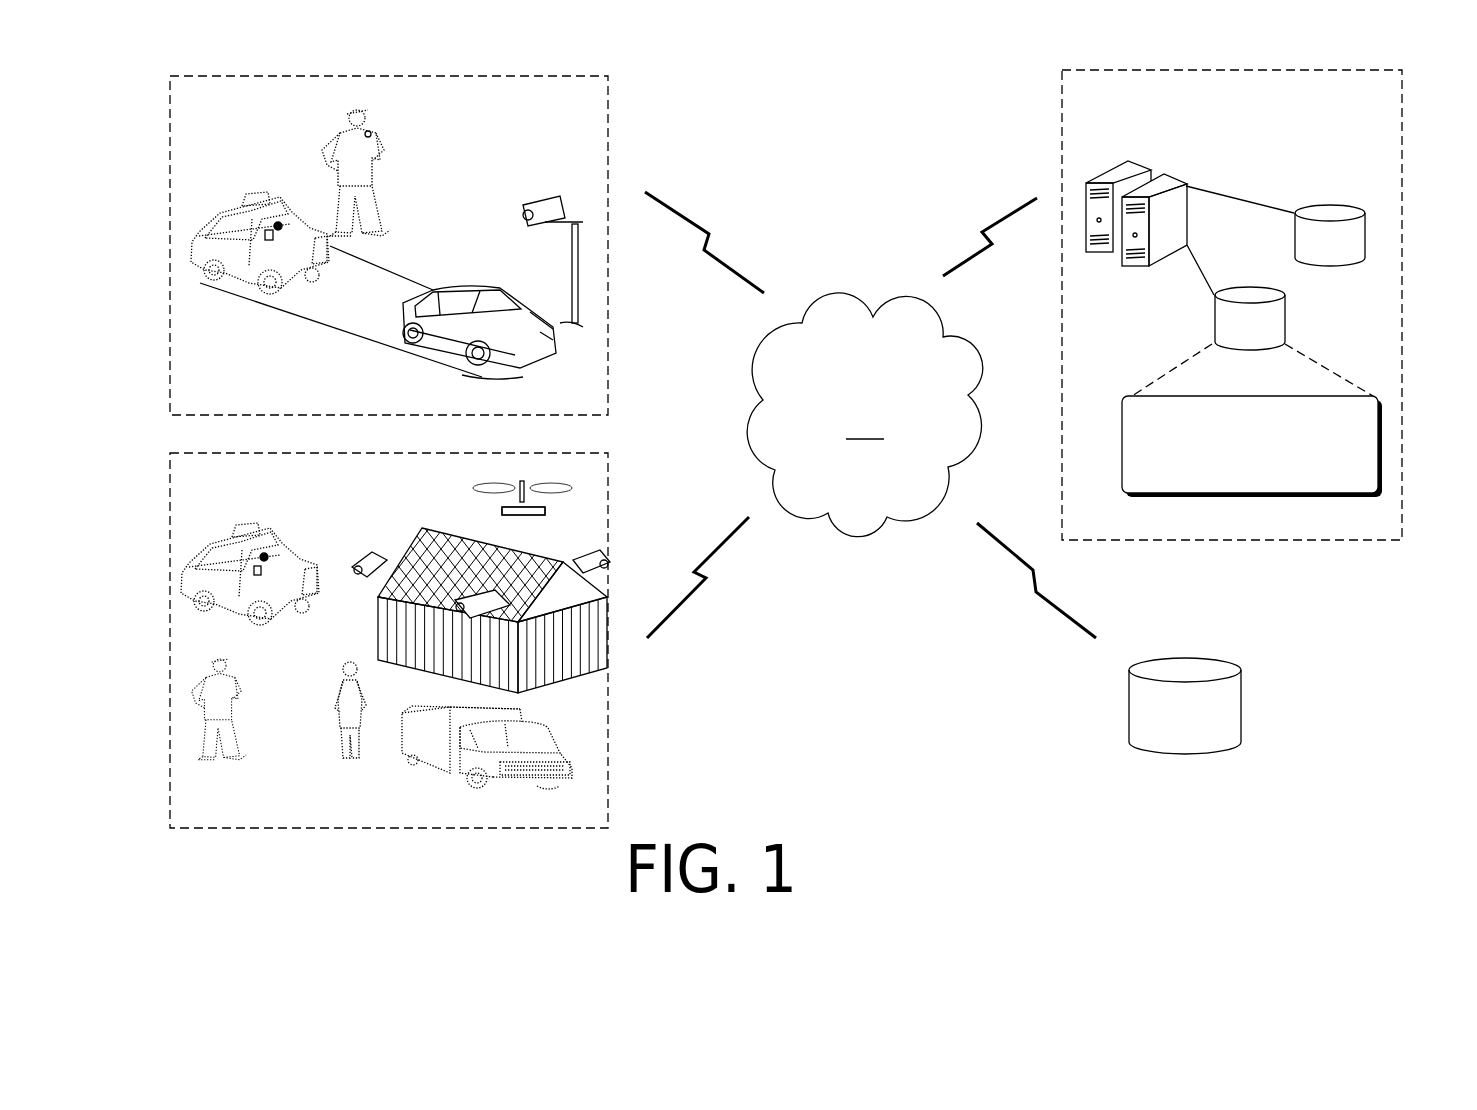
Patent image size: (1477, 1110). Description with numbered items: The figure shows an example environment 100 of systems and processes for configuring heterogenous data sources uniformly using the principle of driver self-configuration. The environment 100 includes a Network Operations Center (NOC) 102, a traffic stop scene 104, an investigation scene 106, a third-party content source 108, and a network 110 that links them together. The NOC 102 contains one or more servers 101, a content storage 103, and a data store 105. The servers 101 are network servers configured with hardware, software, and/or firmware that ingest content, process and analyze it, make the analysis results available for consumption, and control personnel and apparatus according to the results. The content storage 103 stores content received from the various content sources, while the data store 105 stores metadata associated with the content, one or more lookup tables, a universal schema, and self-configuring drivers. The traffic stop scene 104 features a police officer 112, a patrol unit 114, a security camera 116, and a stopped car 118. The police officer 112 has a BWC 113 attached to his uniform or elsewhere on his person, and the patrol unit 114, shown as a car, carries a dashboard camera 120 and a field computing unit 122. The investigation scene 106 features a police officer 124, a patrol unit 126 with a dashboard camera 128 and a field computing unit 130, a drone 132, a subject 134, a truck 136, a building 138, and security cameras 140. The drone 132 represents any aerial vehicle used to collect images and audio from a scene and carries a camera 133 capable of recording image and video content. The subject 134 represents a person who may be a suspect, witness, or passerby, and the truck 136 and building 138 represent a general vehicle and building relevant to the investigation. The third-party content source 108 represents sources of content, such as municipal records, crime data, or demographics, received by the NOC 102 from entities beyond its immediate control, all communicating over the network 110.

The environment 100 is at (1187, 837).
The servers 101 is at (1186, 186).
The Network Operations Center (NOC) 102 is at (1251, 129).
The content storage 103 is at (1364, 211).
The traffic stop scene 104 is at (610, 80).
The data store 105 is at (1285, 295).
The investigation scene 106 is at (172, 460).
The third-party content source 108 is at (1242, 668).
The network 110 is at (865, 415).
The police officer 112 is at (338, 130).
The BWC 113 is at (370, 133).
The patrol unit 114 is at (212, 226).
The security camera 116 is at (530, 205).
The stopped car 118 is at (498, 285).
The dashboard camera 120 is at (278, 222).
The field computing unit 122 is at (268, 240).
The police officer 124 is at (208, 668).
The patrol unit 126 is at (205, 547).
The dashboard camera 128 is at (264, 553).
The field computing unit 130 is at (257, 575).
The drone 132 is at (503, 507).
The camera 133 is at (547, 512).
The subject 134 is at (333, 712).
The truck 136 is at (420, 768).
The building 138 is at (580, 678).
The security cameras 140 is at (598, 548).